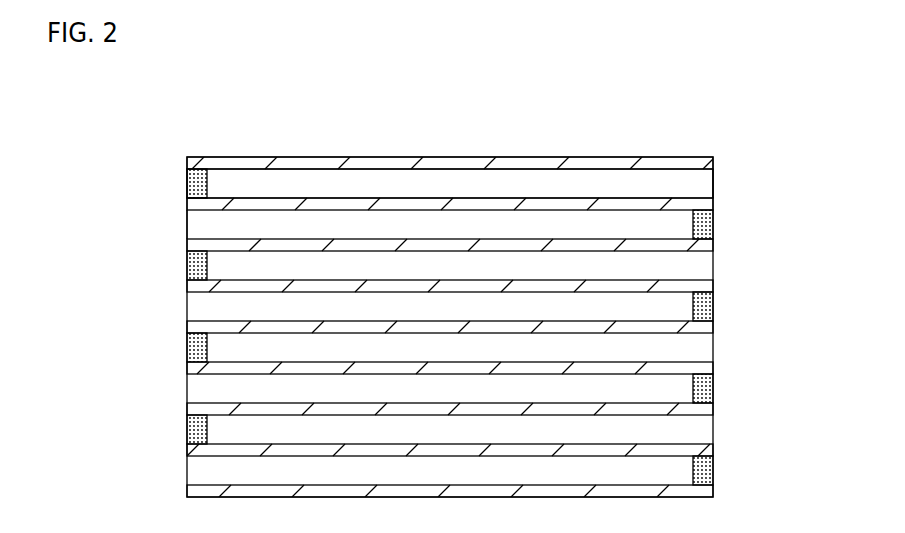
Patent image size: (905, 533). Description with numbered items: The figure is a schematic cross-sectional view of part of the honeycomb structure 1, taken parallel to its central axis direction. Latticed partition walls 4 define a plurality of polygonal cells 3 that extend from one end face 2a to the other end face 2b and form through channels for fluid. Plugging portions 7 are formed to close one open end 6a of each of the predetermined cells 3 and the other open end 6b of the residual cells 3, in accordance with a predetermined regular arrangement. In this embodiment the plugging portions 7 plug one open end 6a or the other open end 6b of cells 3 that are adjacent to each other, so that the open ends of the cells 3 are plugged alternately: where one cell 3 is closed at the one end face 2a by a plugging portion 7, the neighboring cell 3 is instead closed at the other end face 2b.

The honeycomb structure 1 is at (316, 124).
The one end face 2a is at (187, 232).
The other end face 2b is at (713, 182).
The cell 3 is at (437, 183).
The partition wall 4 is at (590, 163).
The one open end 6a is at (187, 190).
The other open end 6b is at (713, 241).
The plugging portion 7 is at (192, 182).